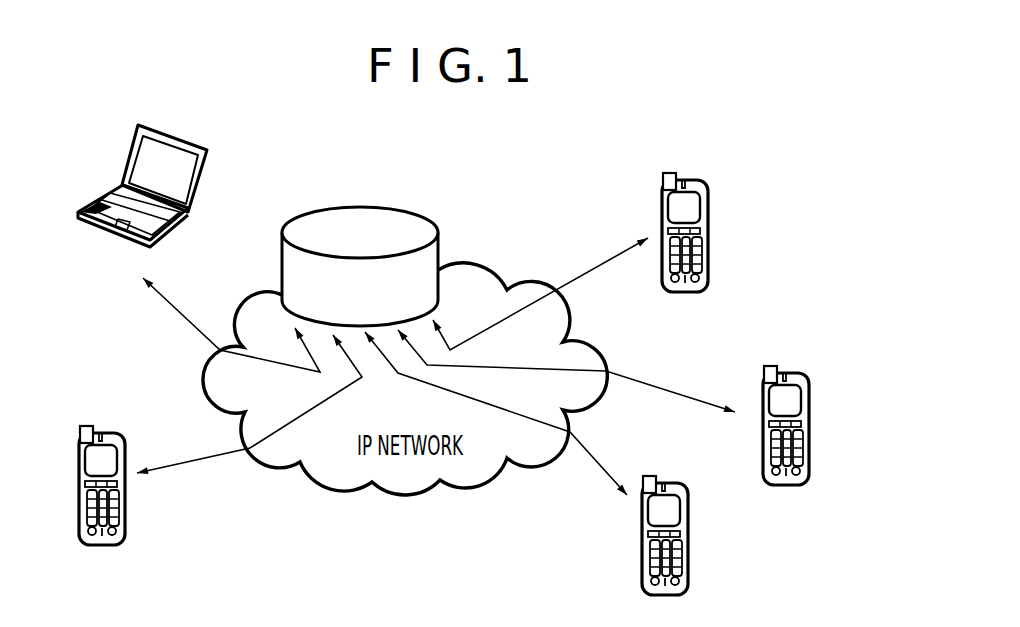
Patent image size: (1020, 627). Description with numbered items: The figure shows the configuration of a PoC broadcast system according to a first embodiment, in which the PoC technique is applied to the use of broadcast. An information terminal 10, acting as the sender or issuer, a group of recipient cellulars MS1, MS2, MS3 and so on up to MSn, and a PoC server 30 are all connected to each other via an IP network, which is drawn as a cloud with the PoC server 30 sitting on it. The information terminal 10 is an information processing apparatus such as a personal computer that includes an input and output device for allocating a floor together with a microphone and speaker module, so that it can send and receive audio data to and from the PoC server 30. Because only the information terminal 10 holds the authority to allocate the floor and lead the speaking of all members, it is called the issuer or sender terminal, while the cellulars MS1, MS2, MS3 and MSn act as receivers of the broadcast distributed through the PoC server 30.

The information terminal 10 is at (173, 132).
The PoC server 30 is at (362, 203).
The cellular MS1 is at (126, 515).
The cellular MS2 is at (642, 567).
The cellular MS3 is at (810, 435).
The cellular MSn is at (708, 245).